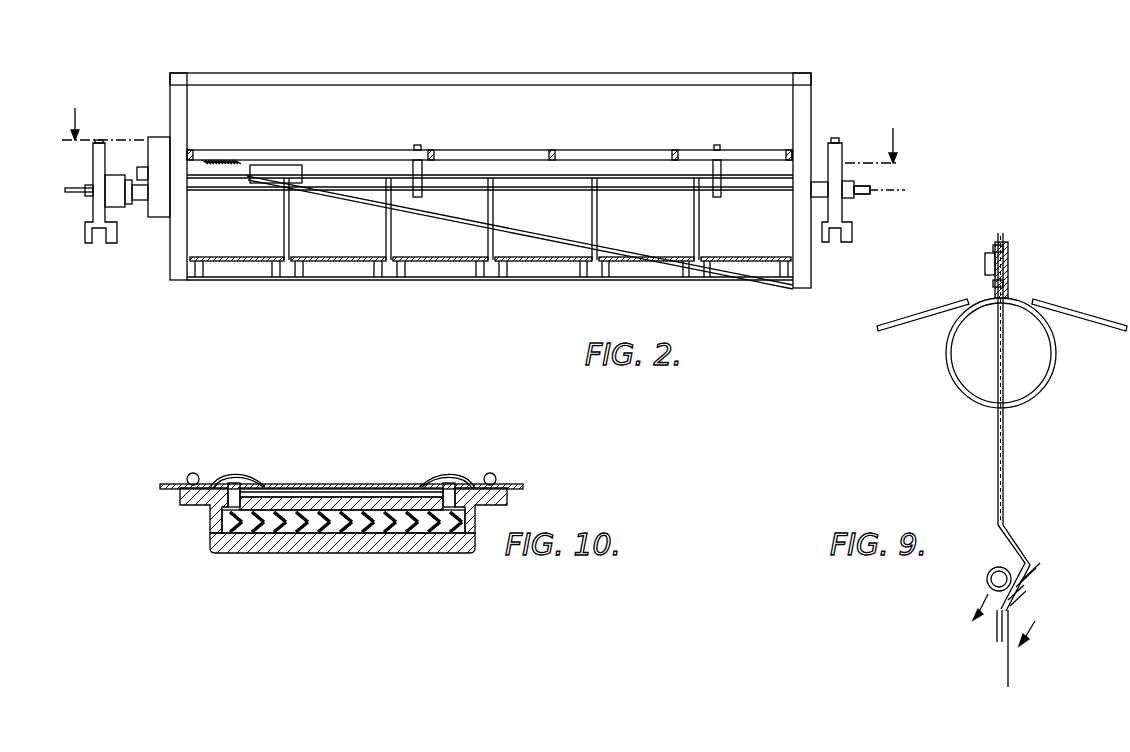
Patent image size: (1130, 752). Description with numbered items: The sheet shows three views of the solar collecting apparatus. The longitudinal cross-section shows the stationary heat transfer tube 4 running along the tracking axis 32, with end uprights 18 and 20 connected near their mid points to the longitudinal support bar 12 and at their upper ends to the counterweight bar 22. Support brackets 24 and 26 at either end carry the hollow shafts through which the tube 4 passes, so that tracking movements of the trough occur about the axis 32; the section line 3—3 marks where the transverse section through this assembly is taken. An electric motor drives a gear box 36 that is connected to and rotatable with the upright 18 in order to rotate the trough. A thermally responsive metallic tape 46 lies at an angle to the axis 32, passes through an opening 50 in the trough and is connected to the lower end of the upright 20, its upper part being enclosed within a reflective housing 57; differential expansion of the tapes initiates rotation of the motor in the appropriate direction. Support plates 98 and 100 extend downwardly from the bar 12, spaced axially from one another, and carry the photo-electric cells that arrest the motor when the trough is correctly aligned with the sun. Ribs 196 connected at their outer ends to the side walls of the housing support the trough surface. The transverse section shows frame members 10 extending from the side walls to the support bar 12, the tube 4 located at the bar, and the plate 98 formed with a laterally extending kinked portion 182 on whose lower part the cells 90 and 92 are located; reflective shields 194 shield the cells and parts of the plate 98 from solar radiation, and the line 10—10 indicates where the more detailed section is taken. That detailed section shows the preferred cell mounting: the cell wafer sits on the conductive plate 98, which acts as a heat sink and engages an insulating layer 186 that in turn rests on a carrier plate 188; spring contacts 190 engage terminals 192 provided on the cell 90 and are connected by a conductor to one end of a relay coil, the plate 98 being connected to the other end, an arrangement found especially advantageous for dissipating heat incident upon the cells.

In FIG. 2, the section line 3- 3 is at (85, 108).
In FIG. 2, the heat transfer tube 4 is at (861, 196).
In FIG. 9, the heat transfer tube 4 is at (992, 569).
In FIG. 9, the frame members 10 is at (1090, 318).
In FIG. 2, the longitudinal support bar 12 is at (358, 150).
In FIG. 9, the longitudinal support bar 12 is at (1056, 376).
In FIG. 2, the end upright 18 is at (175, 94).
In FIG. 2, the end upright 20 is at (803, 101).
In FIG. 2, the counterweight bar 22 is at (476, 77).
In FIG. 2, the support bracket 24 is at (93, 228).
In FIG. 2, the support bracket 26 is at (852, 238).
In FIG. 2, the tracking axis 32 is at (890, 191).
In FIG. 2, the gear box 36 is at (163, 172).
In FIG. 2, the second metallic tape 46 is at (578, 252).
In FIG. 2, the opening in the trough 50 is at (668, 258).
In FIG. 2, the reflective housing 57 is at (291, 168).
In FIG. 9, the photo-electric cell 90 is at (1016, 602).
In FIG. 10, the photo-electric cell 90 is at (325, 488).
In FIG. 9, the photo-electric cell 92 is at (1028, 581).
In FIG. 2, the support plate 98 is at (418, 146).
In FIG. 9, the support plate 98 is at (1003, 485).
In FIG. 10, the support plate 98 is at (357, 503).
In FIG. 2, the support plate 100 is at (716, 146).
In FIG. 9, the kinked portion 182 is at (1012, 545).
In FIG. 10, the insulating layer 186 is at (348, 525).
In FIG. 10, the carrier plate 188 is at (398, 540).
In FIG. 10, the spring contacts 190 is at (233, 475).
In FIG. 10, the terminals 192 is at (262, 487).
In FIG. 9, the reflective shields 194 is at (998, 645).
In FIG. 2, the ribs 196 is at (203, 280).